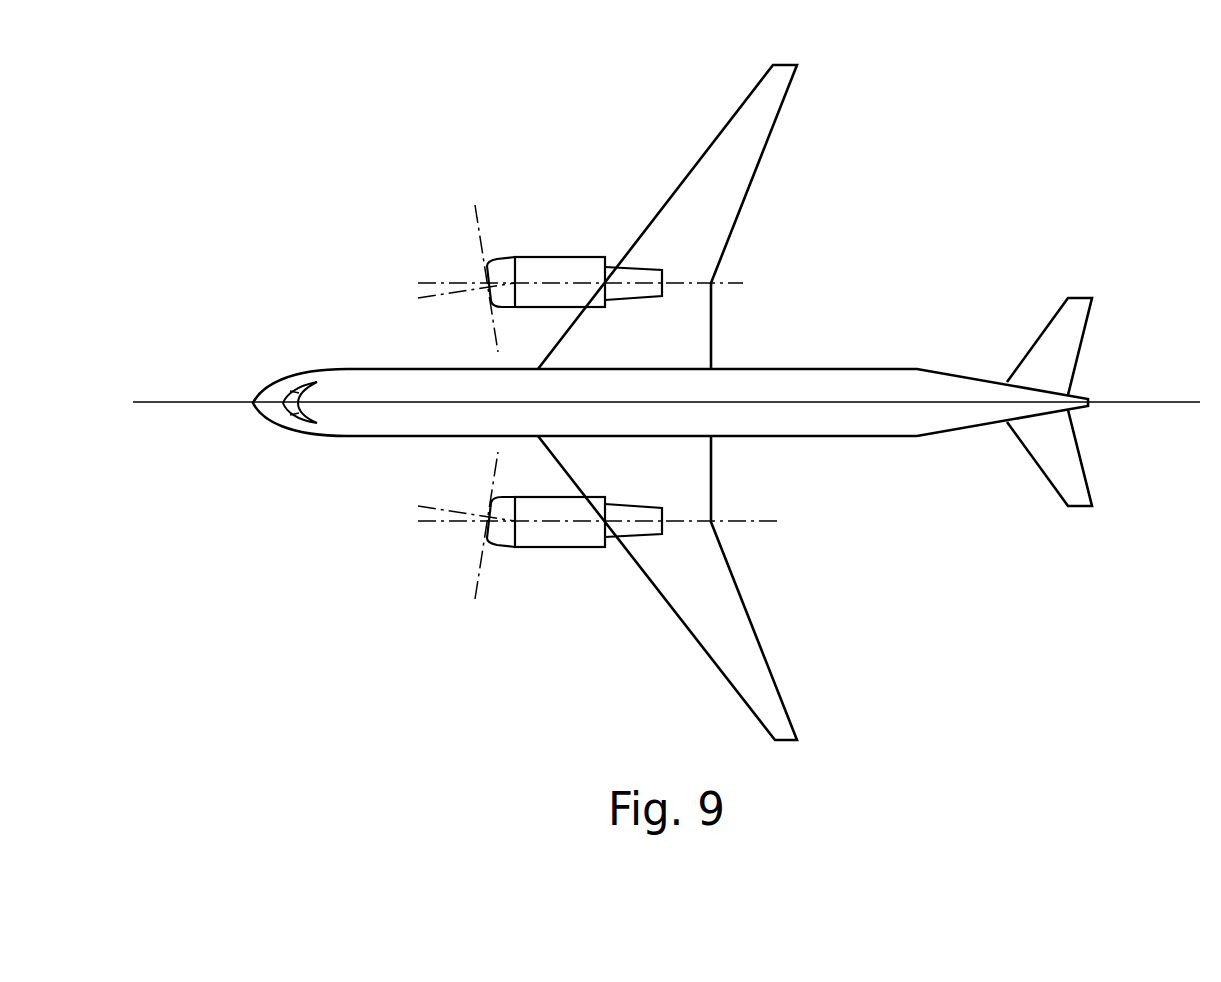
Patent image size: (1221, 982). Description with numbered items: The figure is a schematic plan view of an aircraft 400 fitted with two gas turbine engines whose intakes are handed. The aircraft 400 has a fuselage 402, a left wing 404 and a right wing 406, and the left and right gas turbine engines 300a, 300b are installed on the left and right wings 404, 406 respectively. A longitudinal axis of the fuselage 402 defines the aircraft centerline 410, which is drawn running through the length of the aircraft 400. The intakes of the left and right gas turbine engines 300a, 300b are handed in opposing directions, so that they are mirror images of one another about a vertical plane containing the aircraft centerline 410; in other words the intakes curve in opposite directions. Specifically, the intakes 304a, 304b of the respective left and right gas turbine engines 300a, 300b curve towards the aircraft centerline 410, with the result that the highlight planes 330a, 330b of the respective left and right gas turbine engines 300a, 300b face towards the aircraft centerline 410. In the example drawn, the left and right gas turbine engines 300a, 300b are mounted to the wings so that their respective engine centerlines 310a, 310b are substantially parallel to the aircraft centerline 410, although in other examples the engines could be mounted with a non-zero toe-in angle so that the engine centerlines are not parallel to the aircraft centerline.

The aircraft 400 is at (287, 102).
The fuselage 402 is at (877, 426).
The left wing 404 is at (763, 118).
The right wing 406 is at (763, 675).
The aircraft centerline 410 is at (172, 402).
The left gas turbine engine 300a is at (559, 254).
The right gas turbine engine 300b is at (561, 549).
The intake of left gas turbine engine 304a is at (502, 265).
The intake of right gas turbine engine 304b is at (503, 539).
The engine centerline of left gas turbine engine 310a is at (735, 283).
The engine centerline of right gas turbine engine 310b is at (748, 521).
The highlight plane of left gas turbine engine 330a is at (477, 221).
The highlight plane of right gas turbine engine 330b is at (478, 551).